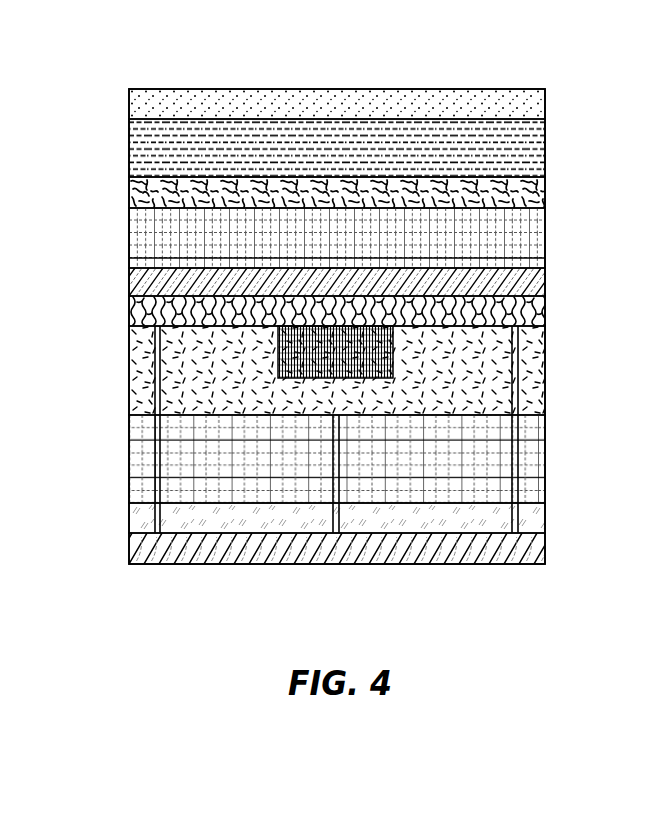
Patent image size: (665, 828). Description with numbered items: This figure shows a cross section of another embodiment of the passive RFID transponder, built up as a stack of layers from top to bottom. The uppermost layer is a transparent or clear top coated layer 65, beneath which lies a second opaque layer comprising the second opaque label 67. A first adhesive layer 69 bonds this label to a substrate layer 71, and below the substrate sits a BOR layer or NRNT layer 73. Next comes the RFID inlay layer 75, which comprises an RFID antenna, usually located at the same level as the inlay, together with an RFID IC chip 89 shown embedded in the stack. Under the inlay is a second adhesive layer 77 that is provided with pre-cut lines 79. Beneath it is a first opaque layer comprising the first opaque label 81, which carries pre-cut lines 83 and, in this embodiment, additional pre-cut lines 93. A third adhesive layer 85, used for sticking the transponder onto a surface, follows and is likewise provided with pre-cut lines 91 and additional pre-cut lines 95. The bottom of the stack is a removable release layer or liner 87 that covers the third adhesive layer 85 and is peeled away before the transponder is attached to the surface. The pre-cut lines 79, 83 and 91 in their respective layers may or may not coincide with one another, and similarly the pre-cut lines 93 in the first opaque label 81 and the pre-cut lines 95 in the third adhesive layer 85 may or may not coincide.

The top coated layer 65 is at (513, 104).
The second opaque label 67 is at (498, 149).
The first adhesive layer 69 is at (500, 193).
The substrate layer 71 is at (500, 241).
The BOR layer or NRNT layer 73 is at (500, 282).
The RFID inlay layer 75 is at (500, 312).
The second adhesive layer 77 is at (463, 348).
The pre-cut lines 79 is at (615, 418).
The first opaque label 81 is at (458, 433).
The pre-cut lines 83 is at (615, 497).
The third adhesive layer 85 is at (498, 519).
The removable release layer or liner 87 is at (507, 546).
The RFID IC chip 89 is at (312, 352).
The pre-cut lines 91 is at (615, 530).
The pre-cut lines 93 is at (337, 457).
The pre-cut lines 95 is at (337, 518).